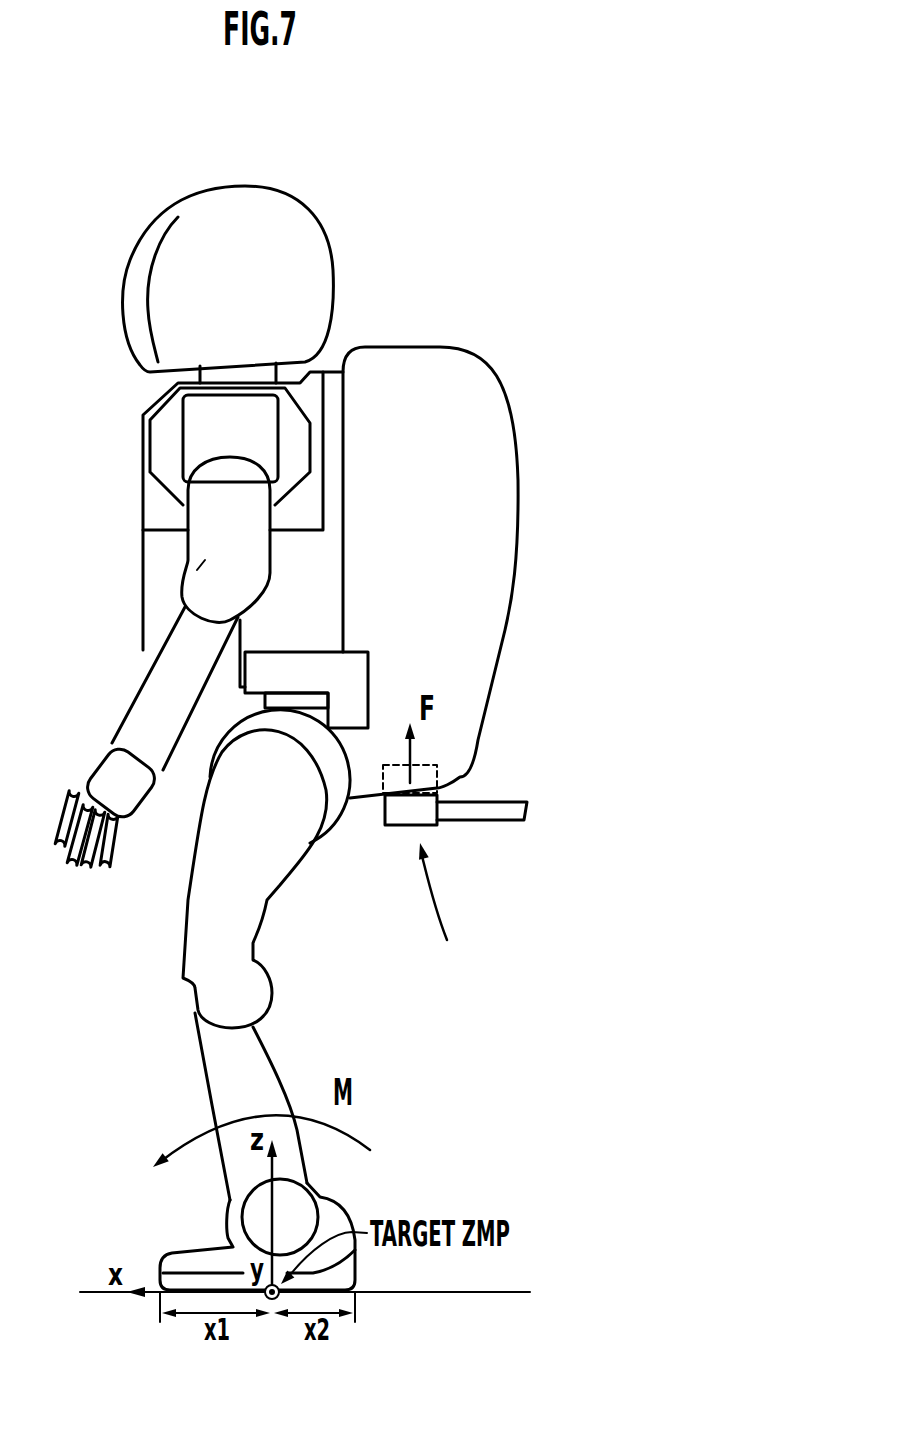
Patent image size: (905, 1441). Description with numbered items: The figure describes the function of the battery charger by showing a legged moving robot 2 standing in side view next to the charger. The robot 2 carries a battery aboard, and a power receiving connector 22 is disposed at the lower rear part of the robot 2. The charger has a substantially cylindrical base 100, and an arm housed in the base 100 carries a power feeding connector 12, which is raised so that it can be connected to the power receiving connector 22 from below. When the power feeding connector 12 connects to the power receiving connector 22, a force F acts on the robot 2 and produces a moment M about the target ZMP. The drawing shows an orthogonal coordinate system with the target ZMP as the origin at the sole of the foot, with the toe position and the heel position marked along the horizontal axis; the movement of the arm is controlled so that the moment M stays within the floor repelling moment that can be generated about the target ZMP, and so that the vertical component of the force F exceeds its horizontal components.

The legged moving robot 2 is at (372, 205).
The power feeding connector 12 is at (430, 825).
The power receiving connector 22 is at (437, 765).
The base 100 is at (503, 822).